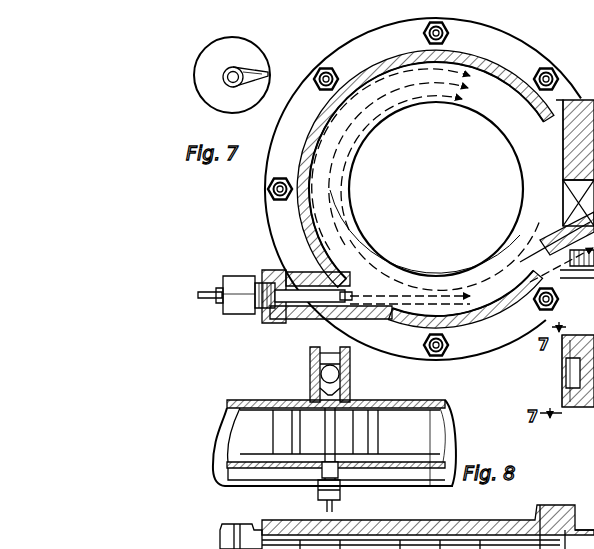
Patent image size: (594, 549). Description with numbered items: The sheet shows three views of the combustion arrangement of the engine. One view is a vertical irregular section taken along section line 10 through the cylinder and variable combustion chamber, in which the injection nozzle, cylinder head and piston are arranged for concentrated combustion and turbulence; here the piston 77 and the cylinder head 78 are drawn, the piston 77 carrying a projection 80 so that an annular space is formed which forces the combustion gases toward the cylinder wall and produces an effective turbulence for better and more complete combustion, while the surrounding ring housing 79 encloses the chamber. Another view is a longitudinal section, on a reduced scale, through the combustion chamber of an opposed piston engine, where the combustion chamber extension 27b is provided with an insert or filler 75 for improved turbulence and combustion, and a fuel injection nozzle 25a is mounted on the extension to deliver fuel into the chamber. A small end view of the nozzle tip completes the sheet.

In FIG. 10, the section line 10 is at (197, 292).
In FIG. 10, the fuel injection nozzle 25a is at (238, 316).
In FIG. 8, the fuel injection nozzle 25a is at (336, 490).
In FIG. 8, the combustion chamber extension 27b is at (348, 383).
In FIG. 8, the insert or filler 75 is at (312, 394).
In FIG. 10, the piston 77 is at (436, 189).
In FIG. 10, the cylinder head 78 is at (478, 530).
In FIG. 10, the annular ring housing 79 is at (429, 212).
In FIG. 10, the projection on piston 80 is at (524, 215).